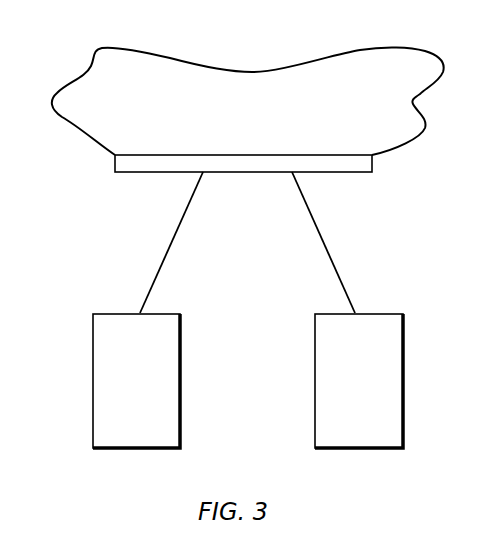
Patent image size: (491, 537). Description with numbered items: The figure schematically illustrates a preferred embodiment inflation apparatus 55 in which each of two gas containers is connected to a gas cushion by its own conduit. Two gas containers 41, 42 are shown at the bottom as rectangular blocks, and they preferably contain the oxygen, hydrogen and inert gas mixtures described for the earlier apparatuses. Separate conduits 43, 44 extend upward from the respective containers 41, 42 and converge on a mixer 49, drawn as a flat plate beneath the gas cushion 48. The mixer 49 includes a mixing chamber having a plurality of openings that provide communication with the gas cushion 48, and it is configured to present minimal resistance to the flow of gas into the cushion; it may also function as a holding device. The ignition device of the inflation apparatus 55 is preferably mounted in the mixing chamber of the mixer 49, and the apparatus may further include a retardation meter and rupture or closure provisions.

The inflation apparatus 55 is at (42, 68).
The gas cushion 48 is at (424, 95).
The mixer 49 is at (370, 163).
The conduit 43 is at (159, 268).
The conduit 44 is at (336, 268).
The gas container 41 is at (94, 398).
The gas container 42 is at (405, 383).